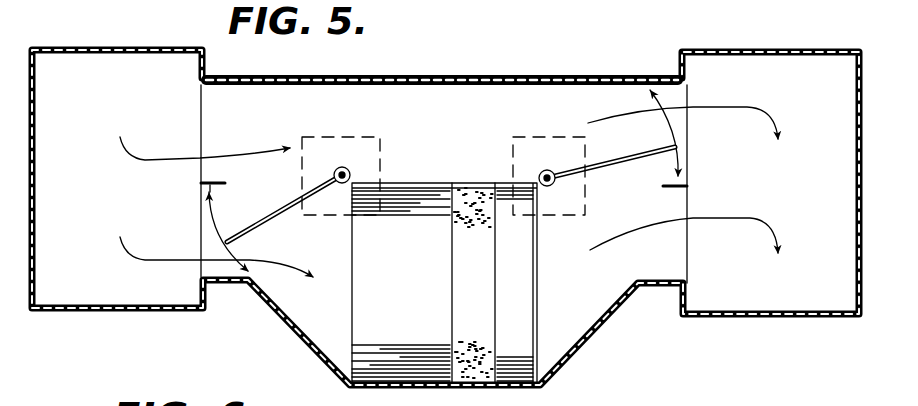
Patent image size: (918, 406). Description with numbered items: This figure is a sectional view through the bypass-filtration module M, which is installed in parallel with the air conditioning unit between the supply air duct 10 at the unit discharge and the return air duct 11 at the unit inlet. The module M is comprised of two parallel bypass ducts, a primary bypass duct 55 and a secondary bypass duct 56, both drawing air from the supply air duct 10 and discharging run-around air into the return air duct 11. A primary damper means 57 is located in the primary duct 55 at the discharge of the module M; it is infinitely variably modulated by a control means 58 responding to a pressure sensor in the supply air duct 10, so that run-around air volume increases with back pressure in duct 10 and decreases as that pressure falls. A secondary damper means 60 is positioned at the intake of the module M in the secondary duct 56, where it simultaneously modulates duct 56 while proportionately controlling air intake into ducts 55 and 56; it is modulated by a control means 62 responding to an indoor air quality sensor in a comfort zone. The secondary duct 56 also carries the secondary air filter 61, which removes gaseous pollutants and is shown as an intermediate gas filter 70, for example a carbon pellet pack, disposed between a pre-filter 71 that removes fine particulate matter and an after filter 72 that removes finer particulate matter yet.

The bypass-filtration module M is at (611, 74).
The supply air duct 10 is at (143, 96).
The return air duct 11 is at (812, 97).
The primary bypass duct 55 is at (484, 112).
The secondary bypass duct 56 is at (339, 248).
The primary damper means 57 is at (613, 168).
The control means 58 is at (558, 138).
The secondary damper means 60 is at (298, 202).
The secondary air filter 61 is at (545, 337).
The control means 62 is at (353, 138).
The intermediate gas filter 70 is at (476, 297).
The pre-filter 71 is at (424, 272).
The after filter 72 is at (519, 305).